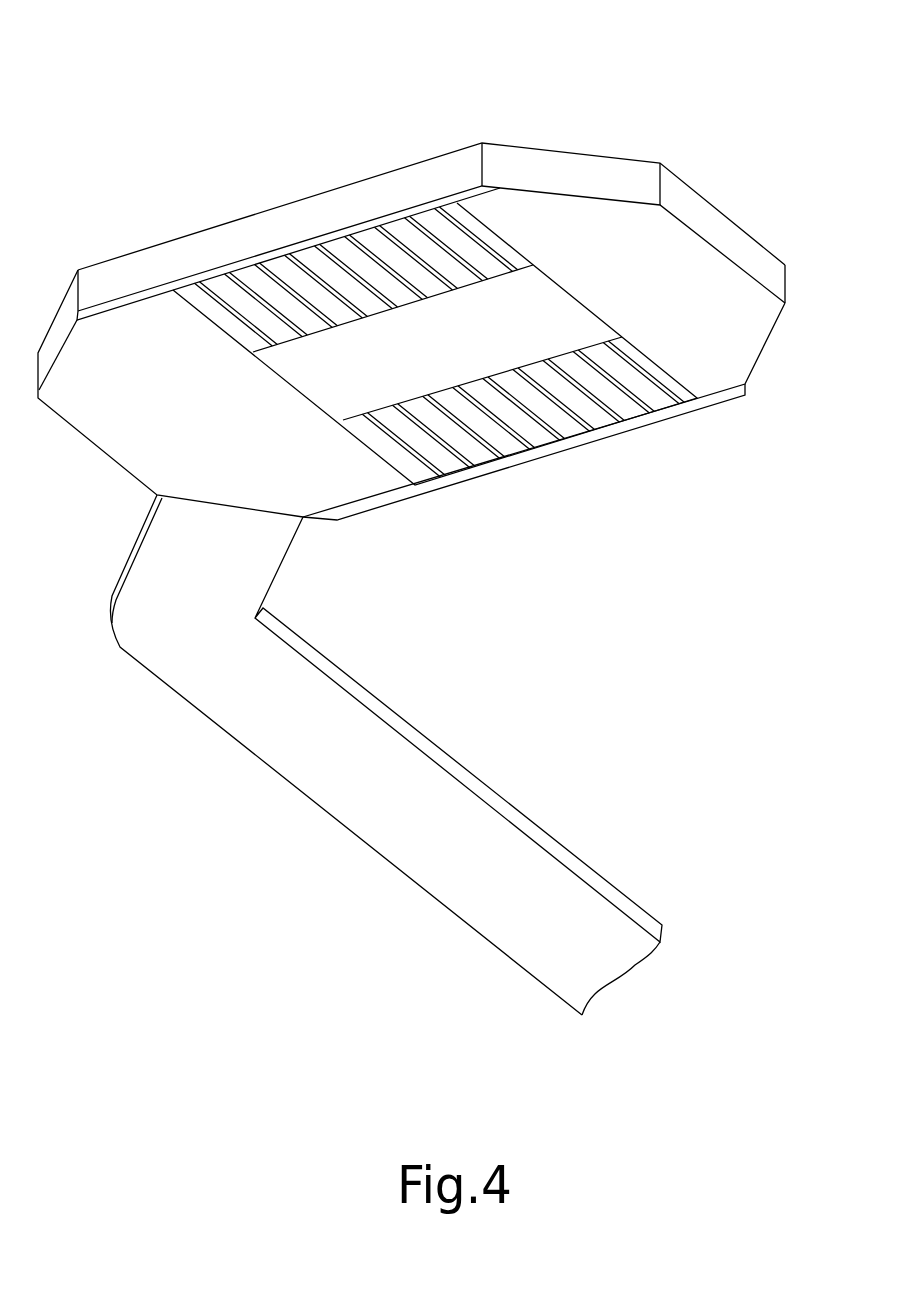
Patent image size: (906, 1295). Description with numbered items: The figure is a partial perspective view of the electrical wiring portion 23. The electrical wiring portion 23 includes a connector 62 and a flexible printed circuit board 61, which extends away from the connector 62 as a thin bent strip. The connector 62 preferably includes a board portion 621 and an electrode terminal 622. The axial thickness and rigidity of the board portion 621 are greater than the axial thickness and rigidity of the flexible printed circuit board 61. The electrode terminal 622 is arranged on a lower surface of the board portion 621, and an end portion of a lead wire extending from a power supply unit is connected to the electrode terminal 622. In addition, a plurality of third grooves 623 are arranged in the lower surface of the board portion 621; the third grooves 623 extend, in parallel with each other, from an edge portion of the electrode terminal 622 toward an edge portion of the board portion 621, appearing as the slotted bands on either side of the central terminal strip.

The electrical wiring portion 23 is at (411, 512).
The flexible printed circuit board 61 is at (340, 763).
The connector 62 is at (435, 422).
The board portion 621 is at (317, 460).
The electrode terminal 622 is at (430, 350).
The third grooves 623 is at (382, 588).